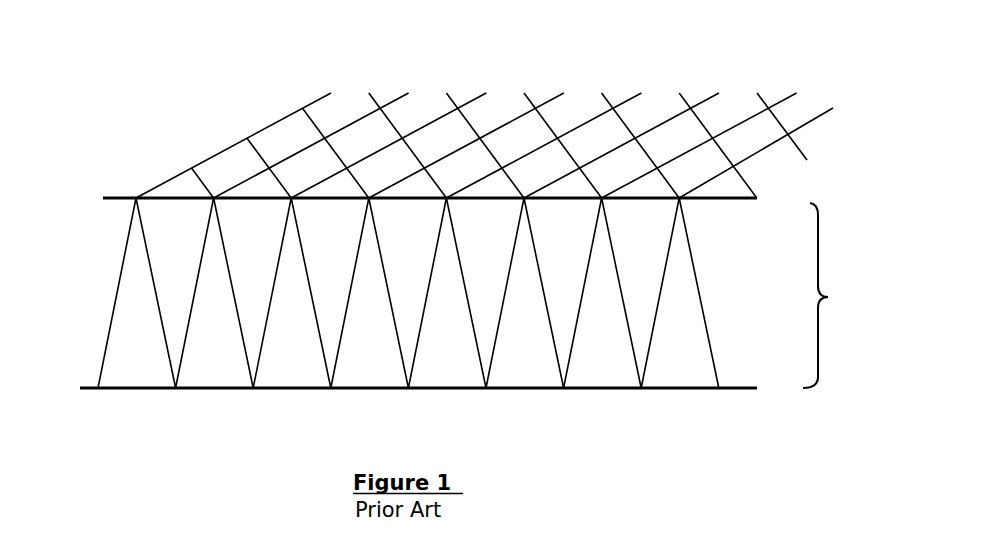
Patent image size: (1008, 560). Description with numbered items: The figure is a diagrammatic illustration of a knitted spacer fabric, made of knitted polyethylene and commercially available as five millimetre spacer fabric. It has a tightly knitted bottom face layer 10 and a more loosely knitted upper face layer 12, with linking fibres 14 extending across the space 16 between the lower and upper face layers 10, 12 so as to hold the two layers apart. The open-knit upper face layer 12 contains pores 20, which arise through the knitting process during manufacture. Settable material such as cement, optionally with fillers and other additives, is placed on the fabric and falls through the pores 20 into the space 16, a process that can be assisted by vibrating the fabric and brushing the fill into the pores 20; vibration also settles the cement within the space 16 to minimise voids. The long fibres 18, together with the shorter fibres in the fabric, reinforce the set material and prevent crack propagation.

The bottom face layer 10 is at (105, 395).
The upper face layer 12 is at (208, 155).
The linking fibres 14 is at (323, 357).
The space 16 is at (838, 295).
The long fibres 18 is at (122, 193).
The pores 20 is at (490, 108).